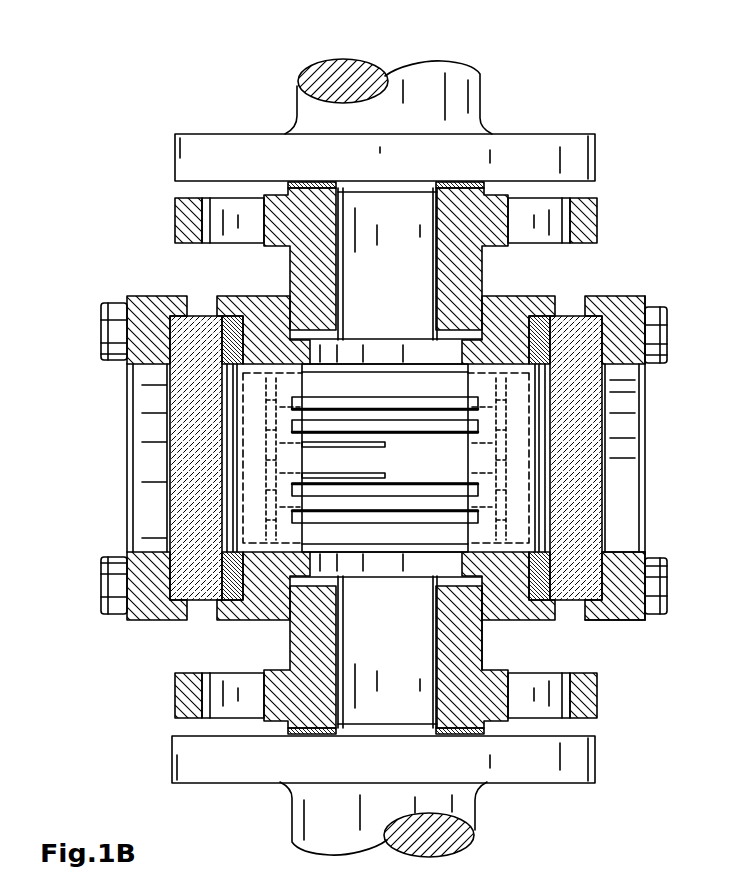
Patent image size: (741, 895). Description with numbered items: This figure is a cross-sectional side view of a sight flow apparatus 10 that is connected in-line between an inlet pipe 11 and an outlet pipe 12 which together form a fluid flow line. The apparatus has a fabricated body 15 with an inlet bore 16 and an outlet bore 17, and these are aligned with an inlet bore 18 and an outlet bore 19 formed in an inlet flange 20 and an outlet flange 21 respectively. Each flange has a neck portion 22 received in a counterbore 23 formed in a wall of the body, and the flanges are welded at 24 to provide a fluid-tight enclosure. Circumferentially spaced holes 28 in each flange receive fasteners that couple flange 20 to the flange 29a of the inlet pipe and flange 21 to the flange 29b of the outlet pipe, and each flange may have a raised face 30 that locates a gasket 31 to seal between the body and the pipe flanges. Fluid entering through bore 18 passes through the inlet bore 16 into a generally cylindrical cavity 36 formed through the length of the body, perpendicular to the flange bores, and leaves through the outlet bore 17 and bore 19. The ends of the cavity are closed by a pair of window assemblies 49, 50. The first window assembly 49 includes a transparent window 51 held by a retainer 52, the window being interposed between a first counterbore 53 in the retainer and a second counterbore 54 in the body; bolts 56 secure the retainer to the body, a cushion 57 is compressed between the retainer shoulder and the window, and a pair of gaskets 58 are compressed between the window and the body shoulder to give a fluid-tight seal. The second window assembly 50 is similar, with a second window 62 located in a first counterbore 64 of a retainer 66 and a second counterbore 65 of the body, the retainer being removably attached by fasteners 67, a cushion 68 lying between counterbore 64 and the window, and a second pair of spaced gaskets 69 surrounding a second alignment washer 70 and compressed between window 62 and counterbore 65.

The sight flow apparatus 10 is at (385, 117).
The inlet pipe 11 is at (483, 118).
The outlet pipe 12 is at (488, 808).
The body 15 is at (383, 473).
The inlet bore 16 is at (347, 355).
The outlet bore 17 is at (373, 572).
The inlet bore of flange 18 is at (410, 123).
The outlet bore of flange 19 is at (443, 806).
The inlet flange 20 is at (175, 213).
The outlet flange 21 is at (172, 703).
The neck portion 22 is at (290, 263).
The counterbore 23 is at (460, 355).
The weld 24 is at (285, 290).
The holes 28 is at (388, 484).
The flange of inlet pipe 29a is at (197, 143).
The flange of outlet pipe 29b is at (278, 775).
The raised face 30 is at (287, 184).
The gasket 31 is at (308, 198).
The cylindrical cavity 36 is at (375, 387).
The first window assembly 49 is at (104, 489).
The second window assembly 50 is at (669, 474).
The window 51 is at (193, 472).
The retainer 52 is at (130, 333).
The first counterbore 53 is at (170, 545).
The second counterbore 54 is at (177, 397).
The bolts 56 is at (107, 318).
The cushion 57 is at (177, 357).
The gaskets 58 is at (225, 332).
The second window 62 is at (590, 625).
The first counterbore 64 is at (617, 555).
The second counterbore 65 is at (576, 573).
The retainer 66 is at (641, 303).
The fasteners 67 is at (665, 364).
The cushion 68 is at (605, 442).
The gaskets 69 is at (486, 630).
The second alignment washer 70 is at (648, 347).